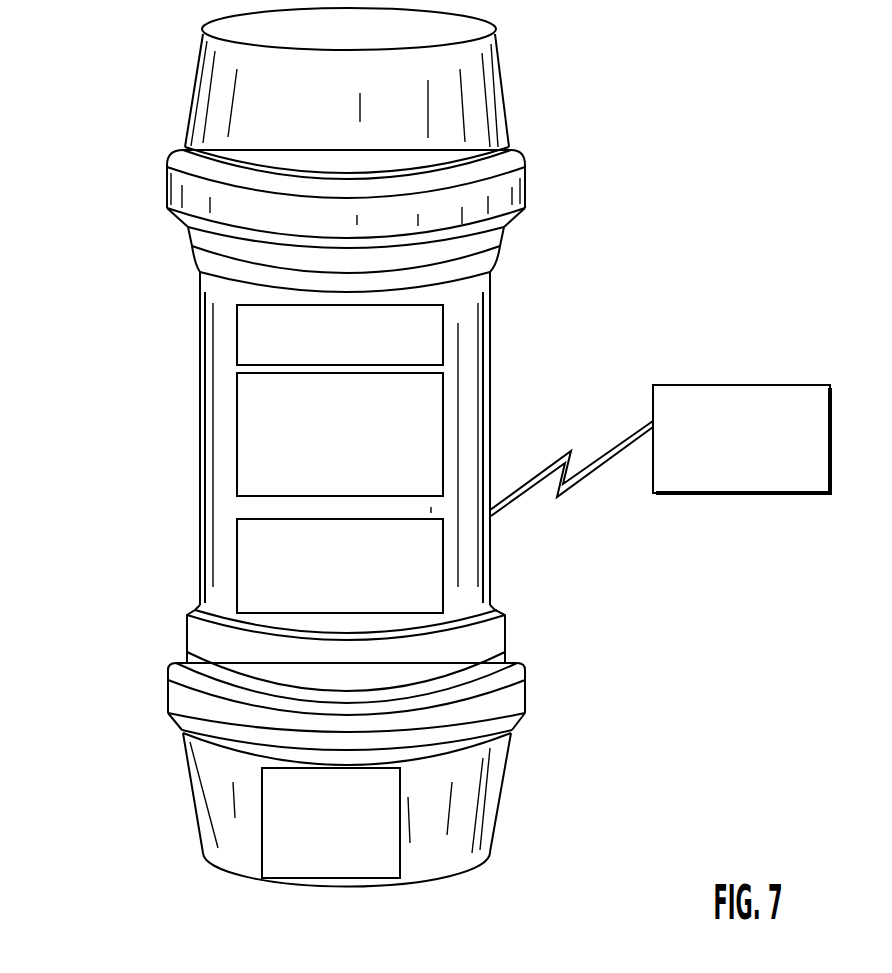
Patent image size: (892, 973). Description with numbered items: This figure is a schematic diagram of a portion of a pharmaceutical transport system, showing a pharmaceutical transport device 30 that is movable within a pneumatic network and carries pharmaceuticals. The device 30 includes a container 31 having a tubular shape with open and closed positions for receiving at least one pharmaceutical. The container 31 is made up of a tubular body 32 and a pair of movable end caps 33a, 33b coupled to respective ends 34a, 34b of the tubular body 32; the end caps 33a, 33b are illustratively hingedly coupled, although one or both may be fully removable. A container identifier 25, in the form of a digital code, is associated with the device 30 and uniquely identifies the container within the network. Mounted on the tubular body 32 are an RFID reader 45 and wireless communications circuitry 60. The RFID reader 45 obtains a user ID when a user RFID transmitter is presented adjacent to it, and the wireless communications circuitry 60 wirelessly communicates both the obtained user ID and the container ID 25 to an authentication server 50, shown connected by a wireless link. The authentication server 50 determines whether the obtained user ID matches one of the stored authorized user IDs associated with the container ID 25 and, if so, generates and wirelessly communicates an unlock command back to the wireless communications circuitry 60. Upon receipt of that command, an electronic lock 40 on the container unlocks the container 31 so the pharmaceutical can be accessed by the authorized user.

The pharmaceutical transport device 30 is at (308, 470).
The container 31 is at (271, 460).
The tubular body 32 is at (200, 473).
The movable end cap 33a is at (497, 53).
The movable end cap 33b is at (348, 836).
The end of the tubular body 34a is at (493, 233).
The end of the tubular body 34b is at (463, 753).
The container identifier (ID) 25 is at (237, 350).
The RFID reader 45 is at (237, 428).
The wireless communications circuitry 60 is at (237, 553).
The electronic lock 40 is at (275, 862).
The authentication server 50 is at (723, 383).